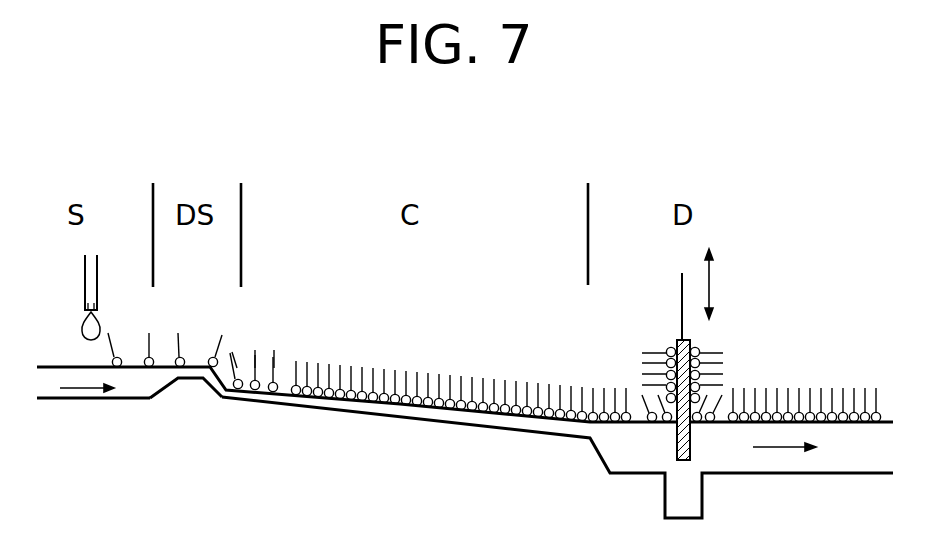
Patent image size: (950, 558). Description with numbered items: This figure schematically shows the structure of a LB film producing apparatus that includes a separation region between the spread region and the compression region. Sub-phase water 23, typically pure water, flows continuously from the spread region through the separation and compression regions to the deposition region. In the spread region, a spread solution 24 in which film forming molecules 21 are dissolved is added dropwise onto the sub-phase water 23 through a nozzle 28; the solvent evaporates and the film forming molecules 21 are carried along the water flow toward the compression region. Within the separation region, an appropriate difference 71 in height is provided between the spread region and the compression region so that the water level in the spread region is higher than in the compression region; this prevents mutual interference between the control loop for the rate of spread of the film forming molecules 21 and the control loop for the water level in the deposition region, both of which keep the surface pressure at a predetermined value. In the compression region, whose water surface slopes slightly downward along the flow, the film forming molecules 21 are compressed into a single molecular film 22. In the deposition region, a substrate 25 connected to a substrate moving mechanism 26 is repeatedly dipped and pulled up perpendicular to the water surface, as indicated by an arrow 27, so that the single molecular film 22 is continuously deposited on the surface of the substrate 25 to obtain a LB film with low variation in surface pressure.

The film forming molecules 21 is at (183, 358).
The single molecular film 22 is at (284, 366).
The sub-phase water 23 is at (136, 389).
The spread solution 24 is at (82, 327).
The substrate 25 is at (672, 342).
The substrate moving mechanism 26 is at (680, 290).
The arrow 27 is at (713, 283).
The nozzle 28 is at (83, 283).
The difference in height 71 is at (193, 379).